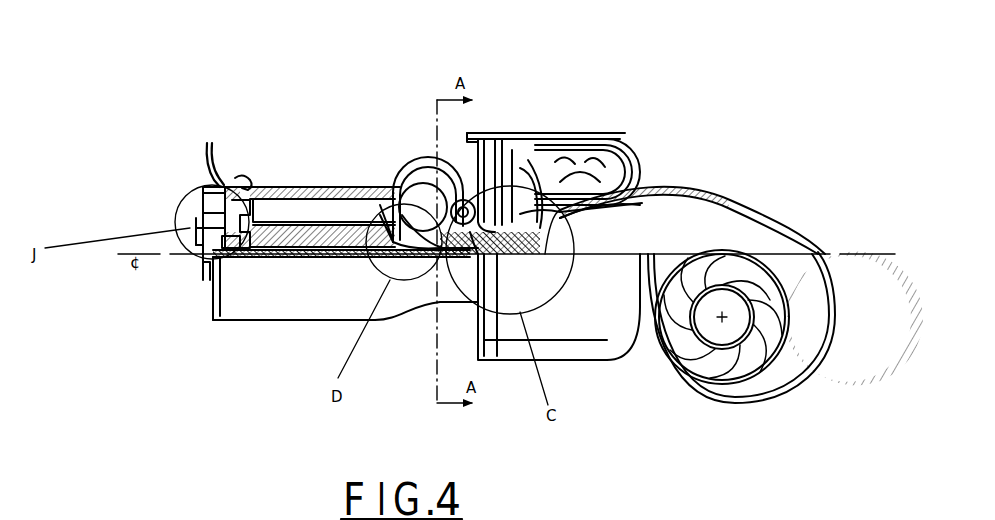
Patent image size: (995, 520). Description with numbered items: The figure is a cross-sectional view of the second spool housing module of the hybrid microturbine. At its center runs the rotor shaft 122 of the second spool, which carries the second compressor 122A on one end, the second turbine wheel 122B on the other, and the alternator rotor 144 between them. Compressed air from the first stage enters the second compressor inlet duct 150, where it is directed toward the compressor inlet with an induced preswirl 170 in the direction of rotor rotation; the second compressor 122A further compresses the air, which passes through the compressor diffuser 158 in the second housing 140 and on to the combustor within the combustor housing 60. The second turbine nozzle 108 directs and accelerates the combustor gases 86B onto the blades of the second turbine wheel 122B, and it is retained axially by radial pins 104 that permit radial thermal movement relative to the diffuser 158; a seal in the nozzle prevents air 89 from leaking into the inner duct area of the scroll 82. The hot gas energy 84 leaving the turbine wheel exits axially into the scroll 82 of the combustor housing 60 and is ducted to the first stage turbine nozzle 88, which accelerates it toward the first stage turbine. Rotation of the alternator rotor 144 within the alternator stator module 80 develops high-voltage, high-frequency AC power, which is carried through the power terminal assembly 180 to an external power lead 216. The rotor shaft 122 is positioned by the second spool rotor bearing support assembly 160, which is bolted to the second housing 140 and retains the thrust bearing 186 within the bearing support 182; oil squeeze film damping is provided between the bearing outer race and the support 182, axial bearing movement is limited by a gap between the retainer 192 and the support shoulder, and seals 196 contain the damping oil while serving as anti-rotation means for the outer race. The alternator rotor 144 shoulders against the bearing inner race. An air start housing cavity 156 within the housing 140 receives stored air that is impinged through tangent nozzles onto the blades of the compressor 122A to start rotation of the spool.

The combustor housing 60 is at (590, 128).
The alternator stator module 80 is at (330, 200).
The scroll (duct/case area) 82 is at (705, 217).
The hot gas energy 84 is at (682, 186).
The combustor gases 86B is at (592, 128).
The first stage turbine nozzle 88 is at (690, 378).
The air 89 is at (600, 133).
The radial pins 104 is at (194, 226).
The second turbine nozzle 108 is at (527, 157).
The rotor shaft (second spool rotor) 122 is at (328, 252).
The second compressor 122A is at (458, 236).
The second turbine wheel 122B is at (638, 157).
The second housing 140 is at (268, 200).
The alternator rotor 144 is at (233, 243).
The second compressor inlet duct 150 is at (420, 157).
The air start housing cavity 156 is at (468, 232).
The compressor diffuser 158 is at (497, 133).
The second spool rotor bearing support assembly 160 is at (201, 288).
The preswirl 170 is at (447, 158).
The power terminal assembly 180 is at (245, 182).
The bearing support 182 is at (195, 210).
The thrust bearing 186 is at (182, 264).
The retainer 192 is at (200, 262).
The seals 196 is at (212, 210).
The external power lead 216 is at (214, 178).